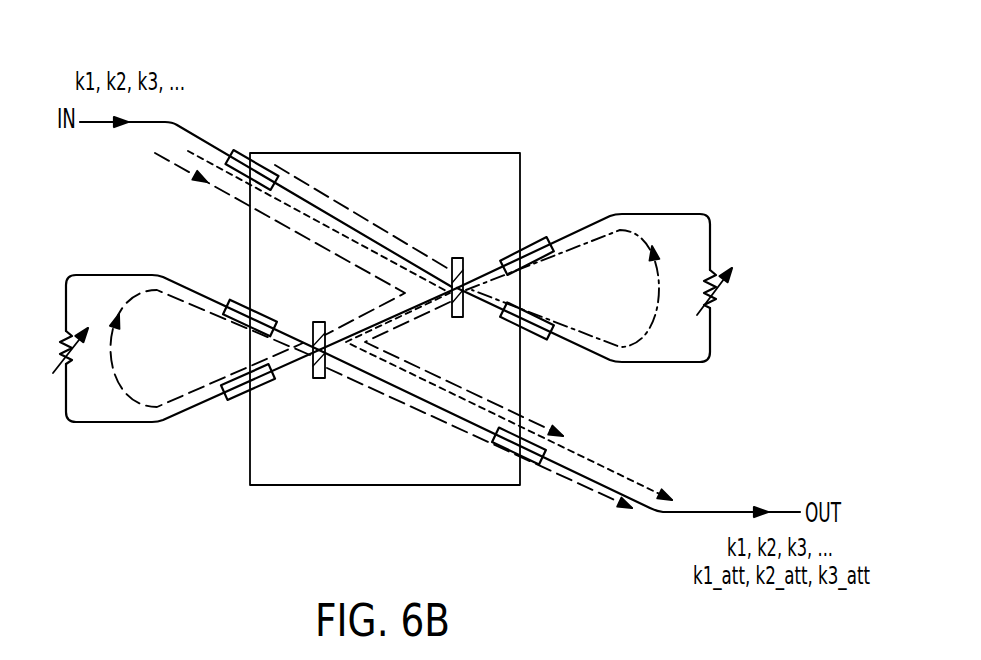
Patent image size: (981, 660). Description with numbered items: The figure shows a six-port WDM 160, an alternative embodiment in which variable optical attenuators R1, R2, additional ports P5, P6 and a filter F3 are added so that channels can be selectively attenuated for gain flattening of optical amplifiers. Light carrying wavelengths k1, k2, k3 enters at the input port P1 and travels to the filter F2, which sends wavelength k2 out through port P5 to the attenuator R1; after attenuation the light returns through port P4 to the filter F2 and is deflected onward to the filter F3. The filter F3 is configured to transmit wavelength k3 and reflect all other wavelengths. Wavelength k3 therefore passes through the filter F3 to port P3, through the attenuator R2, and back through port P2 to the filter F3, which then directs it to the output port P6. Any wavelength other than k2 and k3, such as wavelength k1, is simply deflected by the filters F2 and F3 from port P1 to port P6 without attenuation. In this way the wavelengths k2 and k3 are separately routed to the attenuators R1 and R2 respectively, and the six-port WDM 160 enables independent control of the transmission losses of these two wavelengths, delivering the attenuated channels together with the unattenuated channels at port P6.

The six-port WDM 160 is at (645, 114).
The port P1 is at (203, 140).
The port P2 is at (100, 275).
The port P3 is at (107, 423).
The port P4 is at (594, 224).
The port P5 is at (710, 333).
The port P6 is at (683, 513).
The filter F2 is at (457, 258).
The filter F3 is at (319, 322).
The variable optical attenuator R1 is at (725, 290).
The variable optical attenuator R2 is at (61, 349).
The wavelength k1 is at (397, 397).
The wavelength k2 is at (459, 327).
The wavelength k3 is at (430, 417).